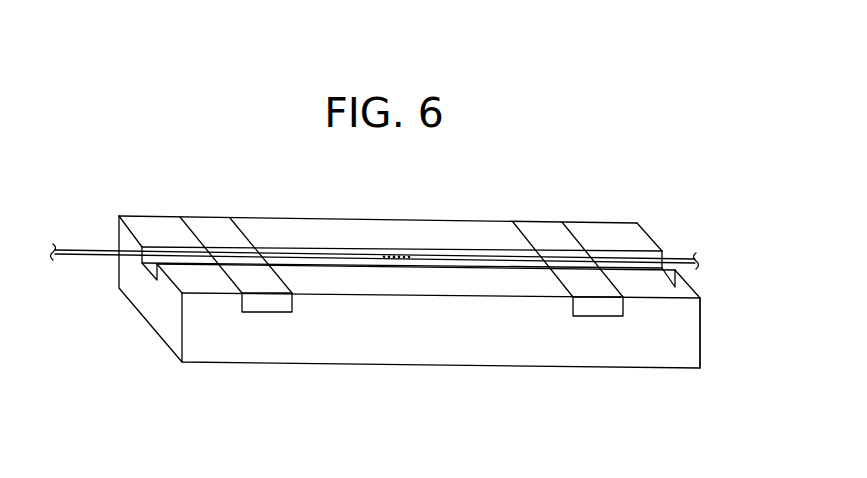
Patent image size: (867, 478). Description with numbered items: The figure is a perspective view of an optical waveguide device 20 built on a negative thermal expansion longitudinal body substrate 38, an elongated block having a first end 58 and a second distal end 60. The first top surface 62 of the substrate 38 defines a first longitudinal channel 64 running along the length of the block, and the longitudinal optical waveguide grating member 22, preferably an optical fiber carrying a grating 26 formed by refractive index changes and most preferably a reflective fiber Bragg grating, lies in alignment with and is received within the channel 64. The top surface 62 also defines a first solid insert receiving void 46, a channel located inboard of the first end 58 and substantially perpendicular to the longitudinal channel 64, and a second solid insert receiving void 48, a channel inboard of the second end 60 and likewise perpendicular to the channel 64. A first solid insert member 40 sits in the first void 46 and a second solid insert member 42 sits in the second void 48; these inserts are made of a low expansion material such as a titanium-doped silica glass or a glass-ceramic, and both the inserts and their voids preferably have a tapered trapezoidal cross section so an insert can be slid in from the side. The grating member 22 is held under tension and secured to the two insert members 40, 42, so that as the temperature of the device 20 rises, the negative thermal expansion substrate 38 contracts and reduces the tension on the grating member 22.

The optical waveguide device 20 is at (147, 152).
The optical waveguide grating member 22 is at (82, 236).
The grating 26 is at (392, 234).
The negative thermal expansion longitudinal body substrate 38 is at (482, 368).
The first solid insert member 40 is at (209, 207).
The second solid insert member 42 is at (530, 210).
The first solid insert receiving void 46 is at (268, 329).
The second solid insert receiving void 48 is at (601, 338).
The first end 58 is at (143, 300).
The second distal end 60 is at (713, 326).
The first top surface 62 is at (473, 227).
The first longitudinal channel 64 is at (130, 276).